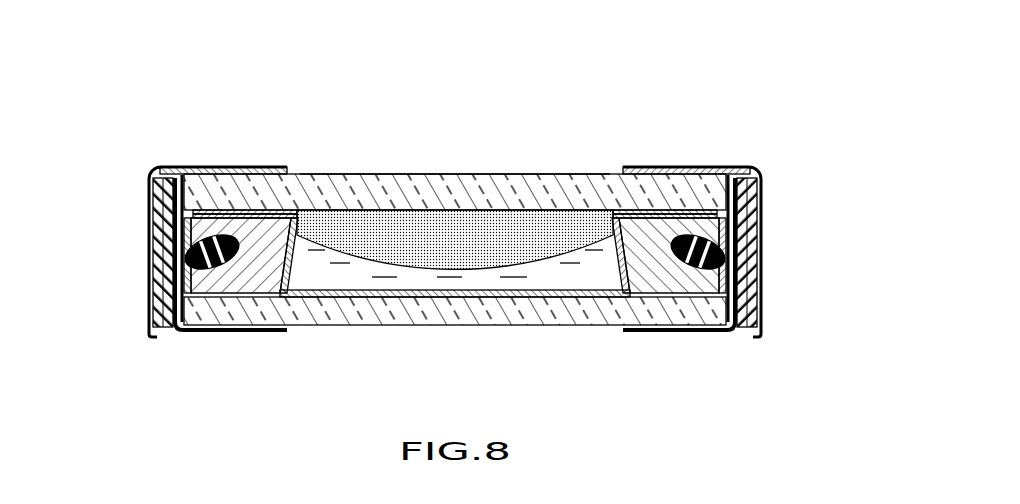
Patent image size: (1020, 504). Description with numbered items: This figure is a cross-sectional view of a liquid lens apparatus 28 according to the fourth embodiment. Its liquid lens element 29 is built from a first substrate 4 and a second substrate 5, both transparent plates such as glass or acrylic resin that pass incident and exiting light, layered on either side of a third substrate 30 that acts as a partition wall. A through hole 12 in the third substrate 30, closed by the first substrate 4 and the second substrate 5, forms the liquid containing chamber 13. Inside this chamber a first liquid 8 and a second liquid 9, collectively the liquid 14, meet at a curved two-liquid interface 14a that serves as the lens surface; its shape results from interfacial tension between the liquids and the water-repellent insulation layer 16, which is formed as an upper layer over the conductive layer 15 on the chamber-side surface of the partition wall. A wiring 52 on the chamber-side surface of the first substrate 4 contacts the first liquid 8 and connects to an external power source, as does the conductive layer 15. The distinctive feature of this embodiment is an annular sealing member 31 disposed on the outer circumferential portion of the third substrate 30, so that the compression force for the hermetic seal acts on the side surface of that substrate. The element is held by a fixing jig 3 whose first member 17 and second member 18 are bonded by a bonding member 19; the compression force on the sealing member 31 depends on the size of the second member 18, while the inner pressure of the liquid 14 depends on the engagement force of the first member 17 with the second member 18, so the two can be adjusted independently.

The fixing jig 3 is at (458, 249).
The first substrate 4 is at (435, 173).
The second substrate 5 is at (440, 312).
The first liquid 8 is at (325, 106).
The second liquid 9 is at (325, 173).
The through hole 12 is at (262, 255).
The liquid containing chamber 13 is at (544, 272).
The liquid 14 is at (455, 142).
The two-liquid interface 14a is at (612, 255).
The conductive layer 15 is at (190, 300).
The insulation layer 16 is at (387, 294).
The first member 17 is at (154, 188).
The second member 18 is at (67, 168).
The bonding member 19 is at (165, 222).
The liquid lens apparatus 28 is at (779, 92).
The liquid lens element 29 is at (559, 80).
The third substrate 30 is at (232, 268).
The sealing member 31 is at (200, 168).
The wiring 52 is at (569, 173).